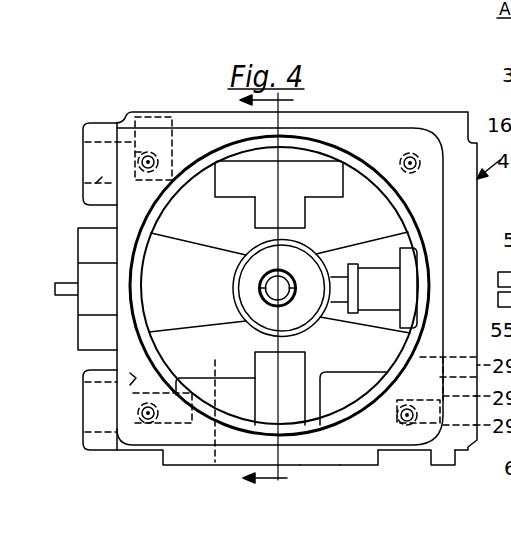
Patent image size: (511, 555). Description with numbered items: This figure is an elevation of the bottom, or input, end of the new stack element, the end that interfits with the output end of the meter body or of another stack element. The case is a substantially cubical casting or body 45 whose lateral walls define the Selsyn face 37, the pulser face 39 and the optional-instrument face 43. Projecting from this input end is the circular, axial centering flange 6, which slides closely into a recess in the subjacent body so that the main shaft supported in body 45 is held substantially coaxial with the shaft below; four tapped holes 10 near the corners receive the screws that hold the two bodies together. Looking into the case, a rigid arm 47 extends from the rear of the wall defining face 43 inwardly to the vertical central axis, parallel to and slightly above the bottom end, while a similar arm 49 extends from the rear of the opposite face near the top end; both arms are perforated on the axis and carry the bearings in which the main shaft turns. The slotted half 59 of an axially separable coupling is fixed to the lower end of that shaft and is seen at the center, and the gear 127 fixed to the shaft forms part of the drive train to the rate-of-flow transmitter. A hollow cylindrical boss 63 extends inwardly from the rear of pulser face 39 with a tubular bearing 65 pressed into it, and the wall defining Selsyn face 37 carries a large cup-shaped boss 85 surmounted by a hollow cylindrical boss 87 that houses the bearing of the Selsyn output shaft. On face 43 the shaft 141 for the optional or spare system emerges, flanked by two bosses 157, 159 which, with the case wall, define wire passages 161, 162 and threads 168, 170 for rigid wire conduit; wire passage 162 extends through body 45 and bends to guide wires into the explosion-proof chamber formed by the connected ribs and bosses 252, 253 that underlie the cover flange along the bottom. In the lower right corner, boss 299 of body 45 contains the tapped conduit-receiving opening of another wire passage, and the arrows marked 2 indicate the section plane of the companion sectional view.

The section line 2- 2 is at (258, 288).
The centering flange 6 is at (360, 164).
The tapped holes 10 is at (168, 155).
The Selsyn face 37 is at (369, 108).
The pulser face 39 is at (333, 467).
The face 43 is at (107, 357).
The body 45 is at (434, 119).
The rigid arm 47 is at (168, 317).
The arm 49 is at (360, 318).
The slotted half of axially separable coupling 59 is at (262, 278).
The hollow cylindrical boss 63 is at (303, 366).
The tubular bearing 65 is at (303, 347).
The cup-shaped boss 85 is at (232, 175).
The hollow cylindrical boss 87 is at (305, 220).
The gear 127 is at (320, 243).
The shaft 141 is at (72, 282).
The boss 157 is at (95, 128).
The boss 159 is at (110, 440).
The wire passage 161 is at (158, 112).
The wire passage 162 is at (210, 390).
The threads 168 is at (102, 177).
The threads 170 is at (84, 393).
The ribs and bosses 252 is at (301, 460).
The ribs and bosses 253 is at (361, 467).
The boss 299 is at (432, 505).